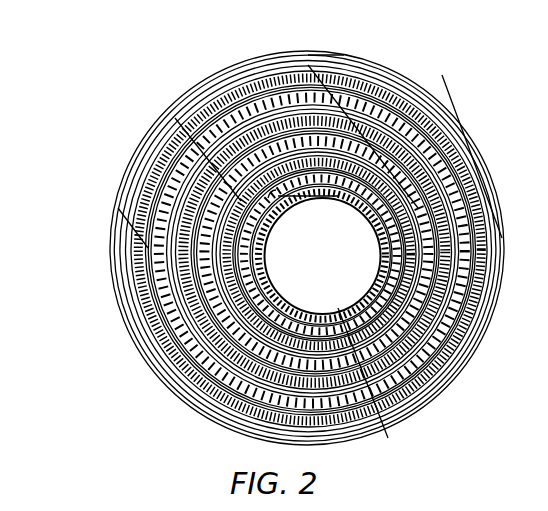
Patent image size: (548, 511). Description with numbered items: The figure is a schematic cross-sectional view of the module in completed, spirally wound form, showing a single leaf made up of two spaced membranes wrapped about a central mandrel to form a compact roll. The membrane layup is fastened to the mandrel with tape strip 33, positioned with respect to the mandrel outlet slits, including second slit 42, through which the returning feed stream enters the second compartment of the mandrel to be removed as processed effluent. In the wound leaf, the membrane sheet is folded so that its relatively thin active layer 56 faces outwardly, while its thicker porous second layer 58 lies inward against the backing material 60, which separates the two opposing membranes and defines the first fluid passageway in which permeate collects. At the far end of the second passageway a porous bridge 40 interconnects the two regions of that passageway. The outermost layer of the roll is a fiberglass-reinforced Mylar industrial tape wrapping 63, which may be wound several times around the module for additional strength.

The porous bridge 40 is at (267, 246).
The second slit 42 is at (258, 244).
The tape strip 33 is at (286, 190).
The active layer 56 is at (112, 246).
The porous second layer 58 is at (118, 258).
The backing material 60 is at (122, 270).
The tape wrapping 63 is at (352, 58).